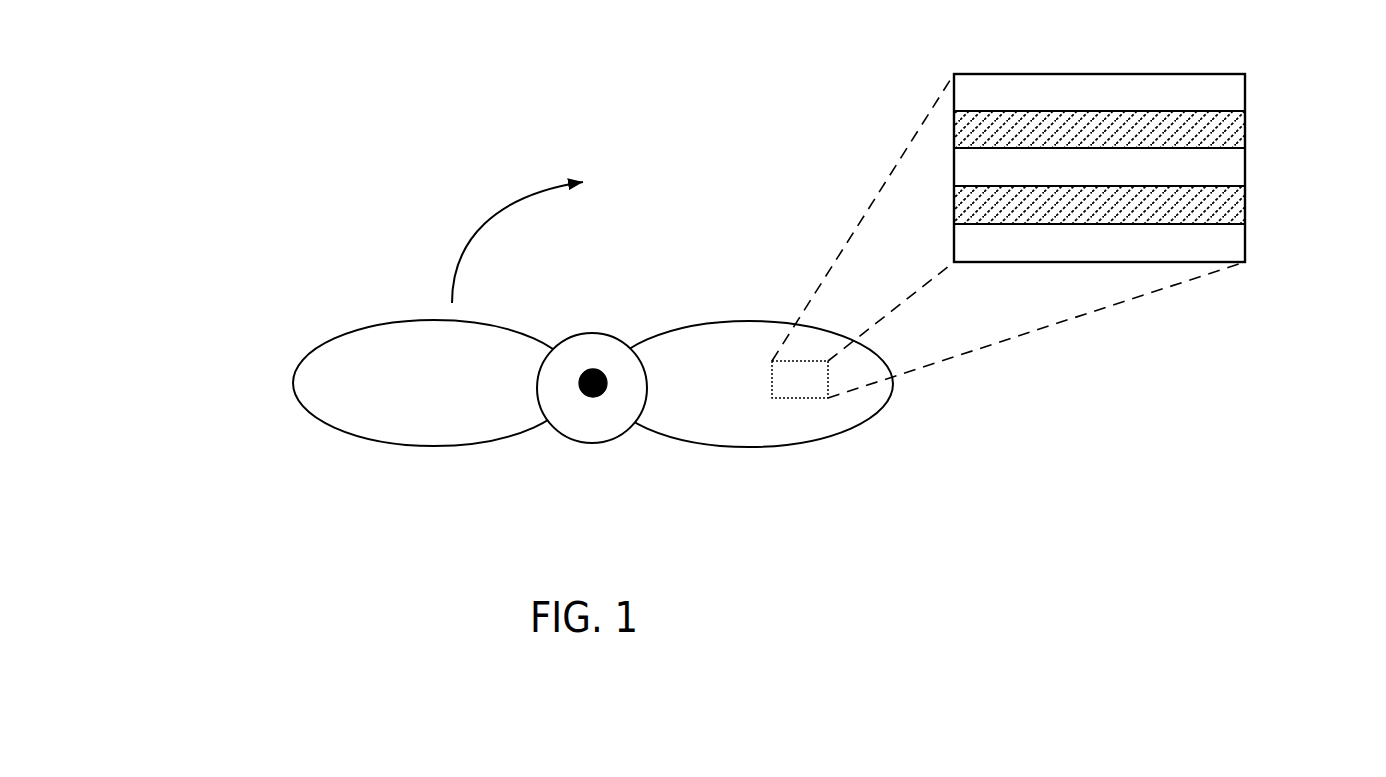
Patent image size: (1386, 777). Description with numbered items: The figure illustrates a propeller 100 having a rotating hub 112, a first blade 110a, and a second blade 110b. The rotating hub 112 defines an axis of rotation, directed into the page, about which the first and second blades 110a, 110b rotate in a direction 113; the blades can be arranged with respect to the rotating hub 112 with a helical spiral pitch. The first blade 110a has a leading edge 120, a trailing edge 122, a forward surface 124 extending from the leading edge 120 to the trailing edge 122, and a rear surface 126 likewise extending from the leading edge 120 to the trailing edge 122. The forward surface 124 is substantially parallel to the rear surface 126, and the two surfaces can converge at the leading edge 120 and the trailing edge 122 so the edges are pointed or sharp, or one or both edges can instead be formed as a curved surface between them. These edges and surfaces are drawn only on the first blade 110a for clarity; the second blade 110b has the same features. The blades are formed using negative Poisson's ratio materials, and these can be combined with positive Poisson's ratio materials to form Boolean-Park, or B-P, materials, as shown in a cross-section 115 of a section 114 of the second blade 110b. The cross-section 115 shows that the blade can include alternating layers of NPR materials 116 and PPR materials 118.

The propeller 100 is at (425, 148).
The first blade 110a is at (428, 300).
The second blade 110b is at (814, 477).
The rotating hub 112 is at (603, 345).
The direction 113 is at (503, 205).
The section 114 is at (813, 390).
The cross-section 115 is at (1060, 201).
The NPR materials 116 is at (1232, 92).
The PPR materials 118 is at (1232, 130).
The leading edge 120 is at (373, 332).
The trailing edge 122 is at (398, 443).
The forward surface 124 is at (368, 388).
The rear surface 126 is at (367, 437).